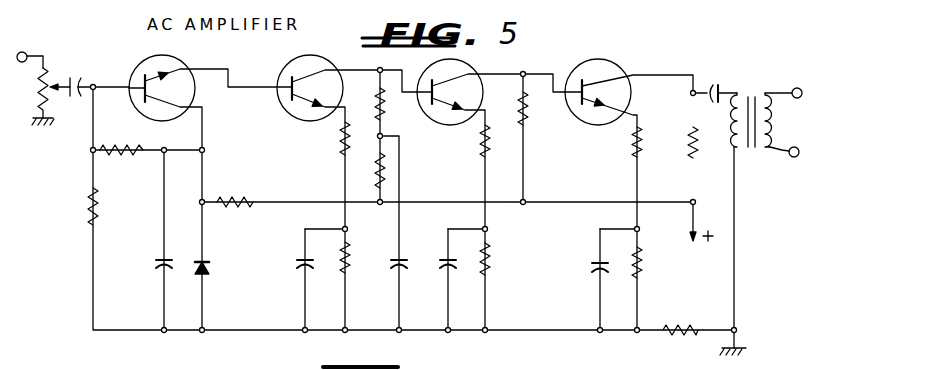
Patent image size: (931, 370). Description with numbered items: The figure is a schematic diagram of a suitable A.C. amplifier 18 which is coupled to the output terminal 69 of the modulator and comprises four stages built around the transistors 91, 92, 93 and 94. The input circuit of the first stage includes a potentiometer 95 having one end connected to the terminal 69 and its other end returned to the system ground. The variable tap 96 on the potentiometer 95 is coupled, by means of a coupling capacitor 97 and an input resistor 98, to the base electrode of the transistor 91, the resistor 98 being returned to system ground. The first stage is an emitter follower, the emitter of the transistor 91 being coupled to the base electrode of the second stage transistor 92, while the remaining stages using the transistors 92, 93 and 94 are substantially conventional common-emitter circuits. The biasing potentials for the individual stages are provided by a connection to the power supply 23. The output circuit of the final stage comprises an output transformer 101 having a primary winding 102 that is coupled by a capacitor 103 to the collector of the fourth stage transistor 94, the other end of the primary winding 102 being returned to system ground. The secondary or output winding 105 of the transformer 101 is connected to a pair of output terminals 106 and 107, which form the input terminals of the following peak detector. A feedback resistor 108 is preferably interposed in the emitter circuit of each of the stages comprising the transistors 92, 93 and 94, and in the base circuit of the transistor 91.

The A.C. amplifier 18 is at (346, 58).
The power supply 23 is at (682, 284).
The output terminal 69 is at (26, 53).
The transistor 91 is at (148, 56).
The transistor 92 is at (293, 63).
The transistor 93 is at (427, 64).
The transistor 94 is at (593, 63).
The potentiometer 95 is at (50, 70).
The variable tap 96 is at (63, 92).
The coupling capacitor 97 is at (86, 82).
The input resistor 98 is at (91, 203).
The output transformer 101 is at (774, 106).
The primary winding 102 is at (730, 128).
The capacitor 103 is at (730, 67).
The secondary winding 105 is at (778, 123).
The output terminal 106 is at (797, 88).
The output terminal 107 is at (792, 158).
The feedback resistor 108 is at (679, 345).